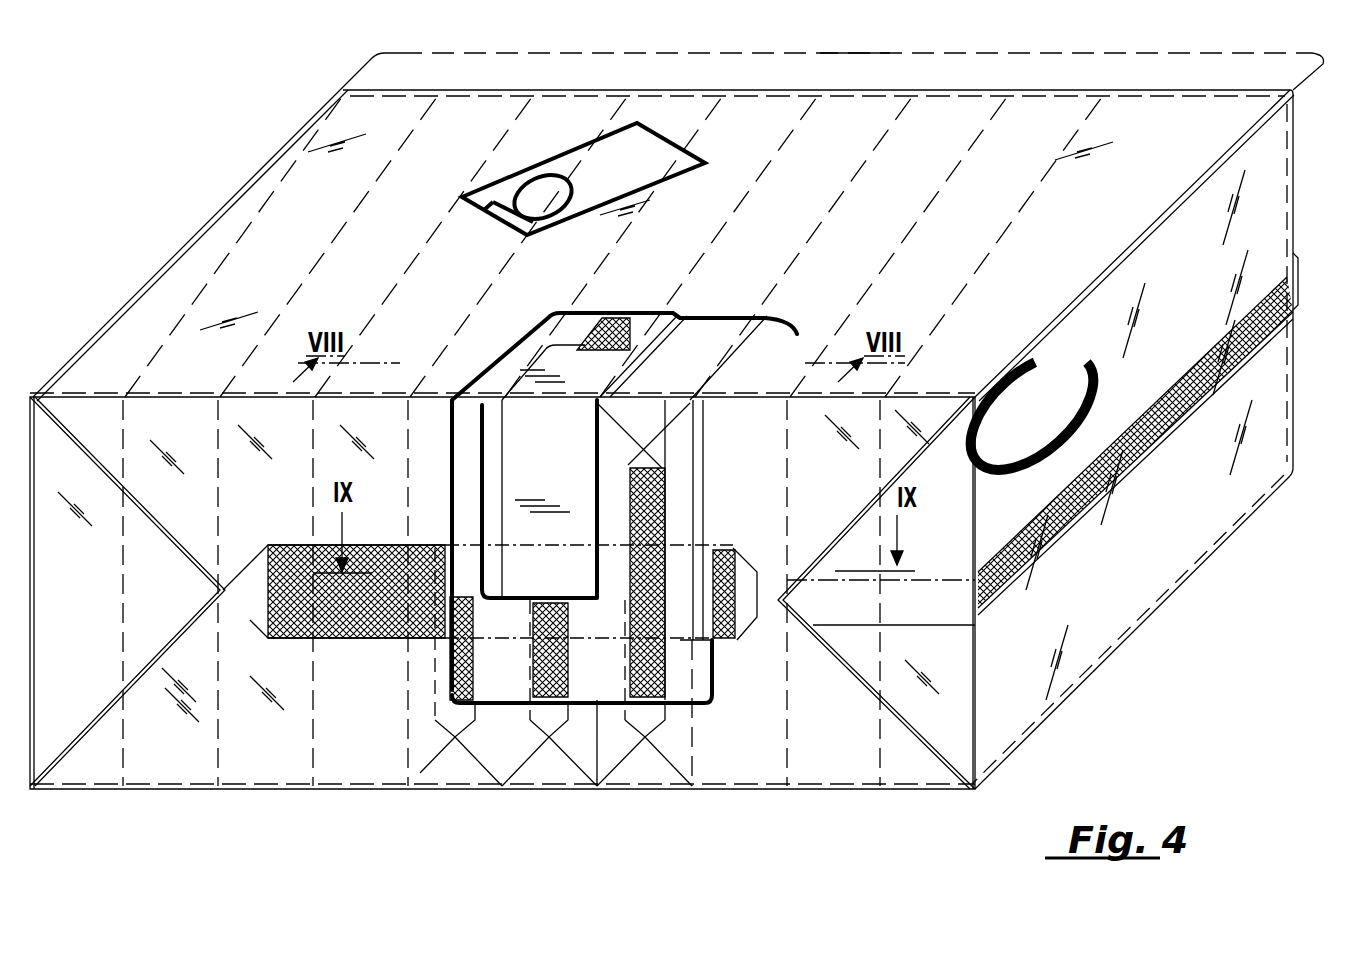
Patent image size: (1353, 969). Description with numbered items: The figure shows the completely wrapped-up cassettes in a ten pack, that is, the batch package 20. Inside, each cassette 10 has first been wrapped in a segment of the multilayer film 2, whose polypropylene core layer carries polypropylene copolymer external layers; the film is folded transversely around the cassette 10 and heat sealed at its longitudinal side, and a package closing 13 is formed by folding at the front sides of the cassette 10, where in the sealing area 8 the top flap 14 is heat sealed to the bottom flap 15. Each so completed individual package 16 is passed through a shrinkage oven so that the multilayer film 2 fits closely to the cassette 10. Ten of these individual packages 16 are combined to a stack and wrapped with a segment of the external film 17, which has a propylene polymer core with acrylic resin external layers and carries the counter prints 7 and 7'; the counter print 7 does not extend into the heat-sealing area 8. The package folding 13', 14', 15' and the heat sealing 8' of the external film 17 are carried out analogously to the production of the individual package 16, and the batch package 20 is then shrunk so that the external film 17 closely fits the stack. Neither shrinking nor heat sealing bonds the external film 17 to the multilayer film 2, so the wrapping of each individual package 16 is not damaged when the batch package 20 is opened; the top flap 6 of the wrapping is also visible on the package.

The batch package 20 is at (228, 138).
The top flap 6 is at (864, 46).
The counter print 7' is at (583, 170).
The counter print 7 is at (1036, 412).
The heat-sealing area 8 is at (871, 548).
The external film 17 is at (213, 258).
The multilayer film 2 is at (418, 285).
The cassette 10 is at (500, 390).
The bottom flap 15 is at (602, 435).
The top flap 14 is at (693, 520).
The package closing 13 is at (593, 593).
The heat sealing 8' is at (525, 602).
The individual package 16 is at (198, 355).
The package folding 14' is at (123, 575).
The package folding 15' is at (110, 650).
The package folding 13' is at (158, 788).